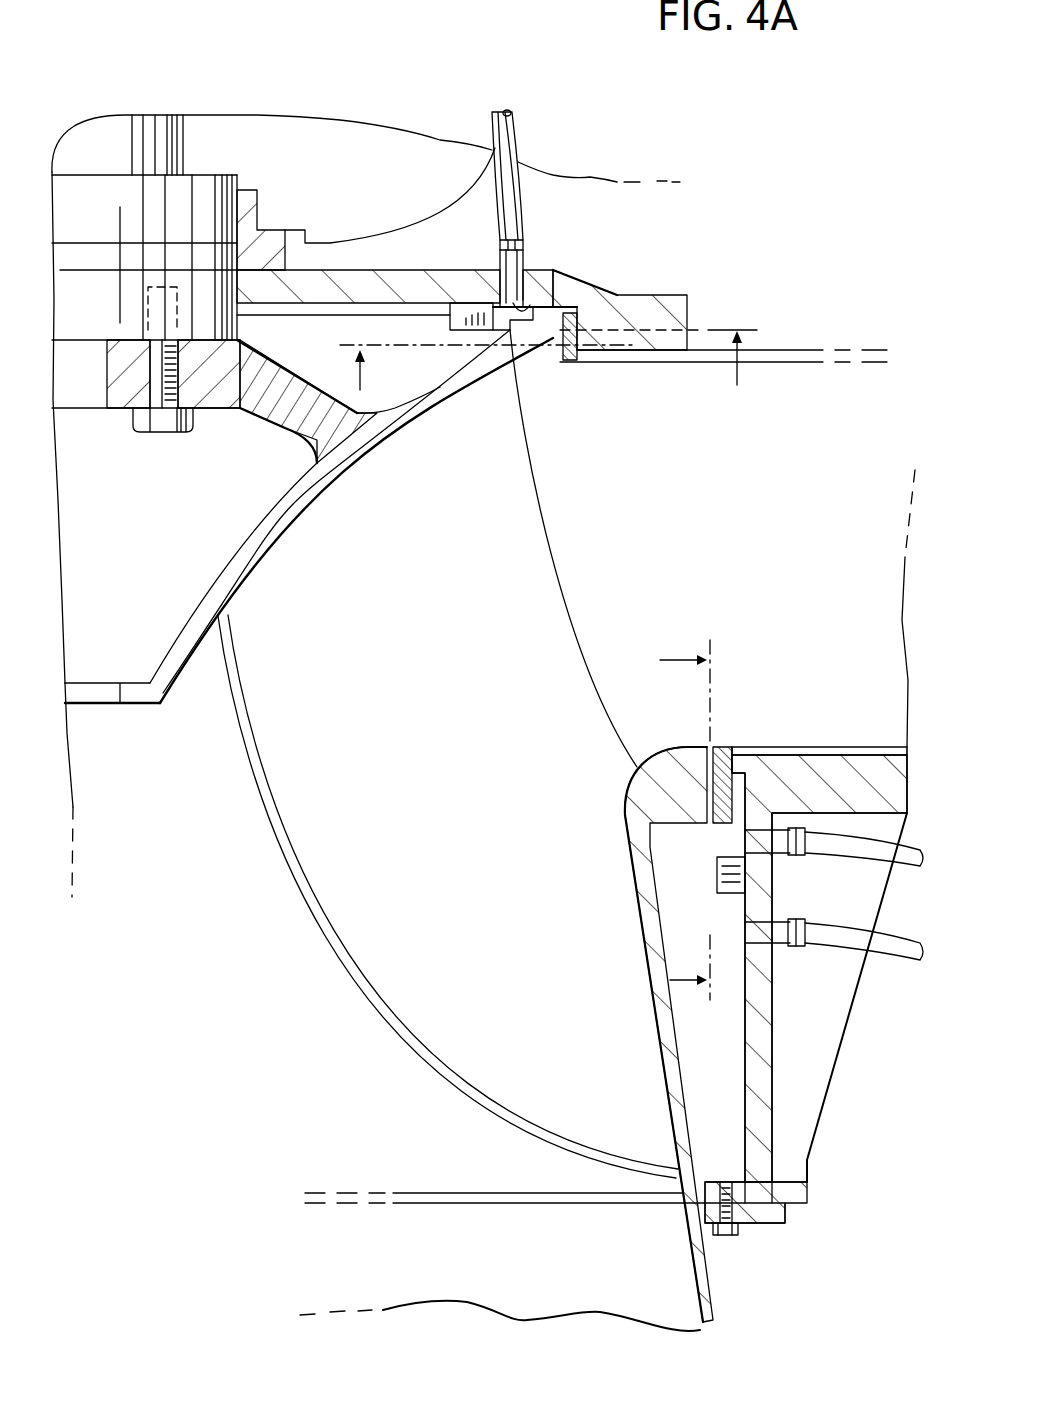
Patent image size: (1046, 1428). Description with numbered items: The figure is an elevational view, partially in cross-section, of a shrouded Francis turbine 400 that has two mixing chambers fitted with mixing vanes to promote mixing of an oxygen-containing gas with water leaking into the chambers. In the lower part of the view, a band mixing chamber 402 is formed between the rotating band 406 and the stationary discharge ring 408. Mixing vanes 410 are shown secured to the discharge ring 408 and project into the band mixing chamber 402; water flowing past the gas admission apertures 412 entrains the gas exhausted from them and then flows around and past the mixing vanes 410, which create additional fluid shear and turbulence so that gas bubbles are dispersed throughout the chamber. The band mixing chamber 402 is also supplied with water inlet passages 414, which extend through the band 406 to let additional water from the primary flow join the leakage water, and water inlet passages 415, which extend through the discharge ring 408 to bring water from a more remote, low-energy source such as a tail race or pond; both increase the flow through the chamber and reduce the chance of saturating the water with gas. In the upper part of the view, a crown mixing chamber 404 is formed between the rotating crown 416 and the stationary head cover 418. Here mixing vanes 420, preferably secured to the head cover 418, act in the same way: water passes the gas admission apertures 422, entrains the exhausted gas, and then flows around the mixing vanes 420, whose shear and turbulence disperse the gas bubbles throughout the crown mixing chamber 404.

The shrouded turbine 400 is at (645, 237).
The band mixing chamber 402 is at (730, 1083).
The crown mixing chamber 404 is at (320, 354).
The rotating band 406 is at (658, 1079).
The stationary discharge ring 408 is at (773, 1004).
The mixing vanes 410 is at (717, 880).
The gas admission apertures 412 is at (743, 842).
The water inlet passages 414 is at (628, 942).
The water inlet passages 415 is at (730, 931).
The rotating crown 416 is at (452, 404).
The stationary head cover 418 is at (605, 290).
The mixing vanes 420 is at (473, 331).
The gas admission apertures 422 is at (527, 308).